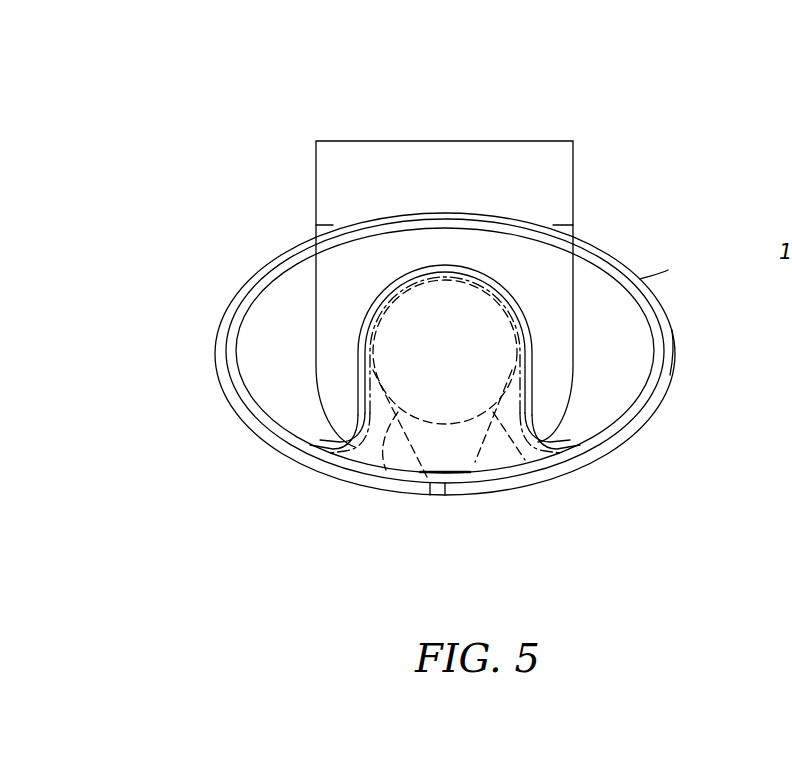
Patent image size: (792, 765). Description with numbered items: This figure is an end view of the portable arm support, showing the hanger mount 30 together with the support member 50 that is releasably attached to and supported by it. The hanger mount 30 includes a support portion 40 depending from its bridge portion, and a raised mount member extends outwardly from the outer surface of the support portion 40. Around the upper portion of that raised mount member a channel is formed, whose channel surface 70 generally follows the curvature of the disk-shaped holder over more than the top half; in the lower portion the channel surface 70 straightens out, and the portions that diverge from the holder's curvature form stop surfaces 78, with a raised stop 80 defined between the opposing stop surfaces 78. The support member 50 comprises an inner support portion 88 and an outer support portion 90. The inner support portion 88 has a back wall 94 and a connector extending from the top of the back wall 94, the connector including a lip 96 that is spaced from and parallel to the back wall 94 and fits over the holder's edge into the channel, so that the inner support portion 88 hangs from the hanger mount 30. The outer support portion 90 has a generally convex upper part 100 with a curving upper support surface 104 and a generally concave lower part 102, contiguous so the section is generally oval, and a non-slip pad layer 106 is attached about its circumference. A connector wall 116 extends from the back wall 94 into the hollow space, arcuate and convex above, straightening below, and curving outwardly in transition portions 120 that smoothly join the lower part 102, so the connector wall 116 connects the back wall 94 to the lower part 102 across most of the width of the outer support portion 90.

The hanger mount 30 is at (578, 163).
The support portion 40 is at (557, 301).
The support member 50 is at (223, 306).
The channel surface 70 is at (455, 288).
The stop surfaces 78 is at (386, 470).
The raised stop 80 is at (437, 447).
The inner support portion 88 is at (357, 330).
The outer support portion 90 is at (660, 366).
The back wall 94 is at (458, 443).
The lip 96 is at (525, 460).
The upper part 100 is at (312, 253).
The lower part 102 is at (360, 472).
The upper support surface 104 is at (599, 238).
The non-slip pad layer 106 is at (648, 283).
The connector wall 116 is at (522, 352).
The transition portions 120 is at (542, 438).